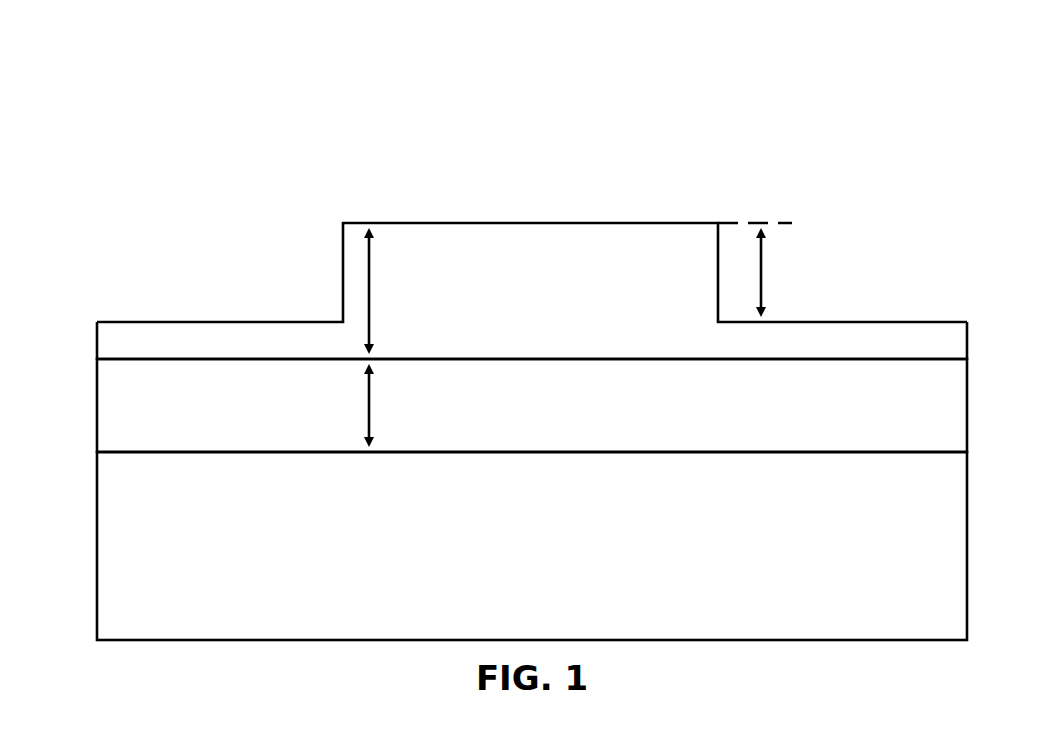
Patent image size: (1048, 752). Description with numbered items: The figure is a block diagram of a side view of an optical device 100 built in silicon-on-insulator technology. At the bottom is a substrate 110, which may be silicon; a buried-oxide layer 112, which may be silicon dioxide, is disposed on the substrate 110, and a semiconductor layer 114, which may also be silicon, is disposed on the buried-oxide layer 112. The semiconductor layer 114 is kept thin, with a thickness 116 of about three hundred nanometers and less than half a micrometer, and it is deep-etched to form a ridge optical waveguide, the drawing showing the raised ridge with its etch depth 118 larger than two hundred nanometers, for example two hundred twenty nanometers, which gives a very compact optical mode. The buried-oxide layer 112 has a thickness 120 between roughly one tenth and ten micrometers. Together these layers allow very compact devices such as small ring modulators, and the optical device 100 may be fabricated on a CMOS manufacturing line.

The optical device 100 is at (870, 112).
The substrate 110 is at (532, 546).
The buried-oxide layer 112 is at (532, 405).
The semiconductor layer 114 is at (532, 291).
The thickness 116 is at (368, 290).
The etch depth 118 is at (762, 275).
The thickness 120 is at (368, 415).